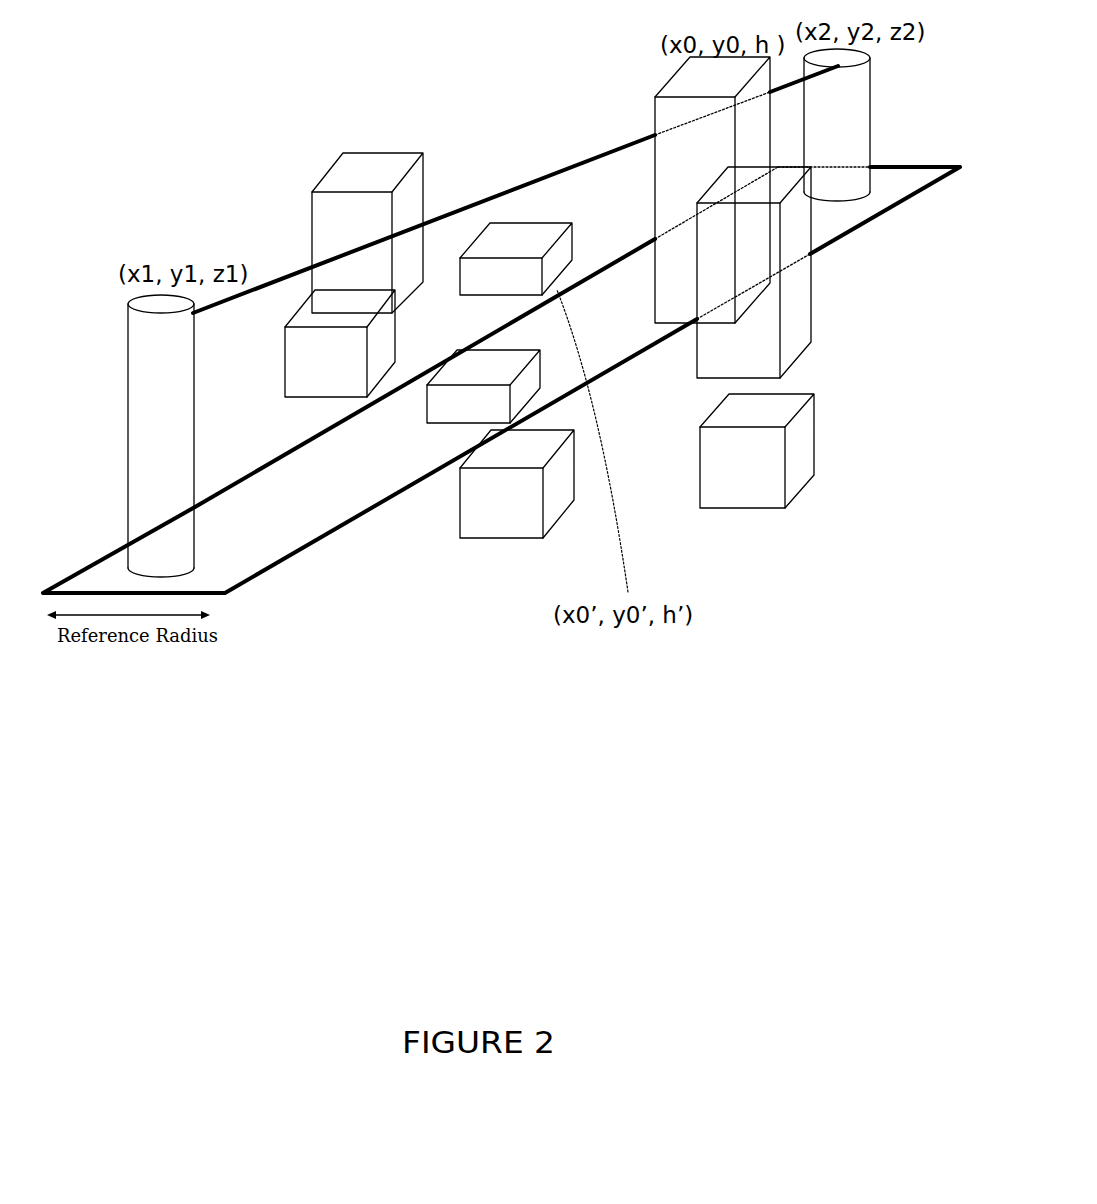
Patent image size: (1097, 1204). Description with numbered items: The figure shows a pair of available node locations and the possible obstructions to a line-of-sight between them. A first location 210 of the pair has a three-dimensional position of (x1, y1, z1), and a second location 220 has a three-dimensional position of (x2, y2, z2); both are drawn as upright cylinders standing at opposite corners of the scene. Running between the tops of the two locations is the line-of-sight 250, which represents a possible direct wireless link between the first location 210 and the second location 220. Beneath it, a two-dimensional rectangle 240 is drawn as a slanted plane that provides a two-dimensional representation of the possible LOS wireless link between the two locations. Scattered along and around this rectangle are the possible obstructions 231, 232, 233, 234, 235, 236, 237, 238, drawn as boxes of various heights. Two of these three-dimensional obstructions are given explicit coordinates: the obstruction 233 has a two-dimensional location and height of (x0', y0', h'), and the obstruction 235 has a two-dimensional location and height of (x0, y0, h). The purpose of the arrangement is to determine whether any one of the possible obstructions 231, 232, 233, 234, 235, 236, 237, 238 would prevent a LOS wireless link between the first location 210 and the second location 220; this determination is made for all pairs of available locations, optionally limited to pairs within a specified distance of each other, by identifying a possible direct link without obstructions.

The first location 210 is at (161, 436).
The second location 220 is at (837, 125).
The possible obstruction 231 is at (367, 233).
The possible obstruction 232 is at (340, 343).
The possible obstruction 233 is at (556, 282).
The possible obstruction 234 is at (516, 259).
The possible obstruction 235 is at (712, 190).
The possible obstruction 236 is at (754, 272).
The possible obstruction 237 is at (517, 484).
The possible obstruction 238 is at (757, 451).
The two-dimensional rectangle 240 is at (501, 380).
The line-of-sight (LOS) 250 is at (562, 160).